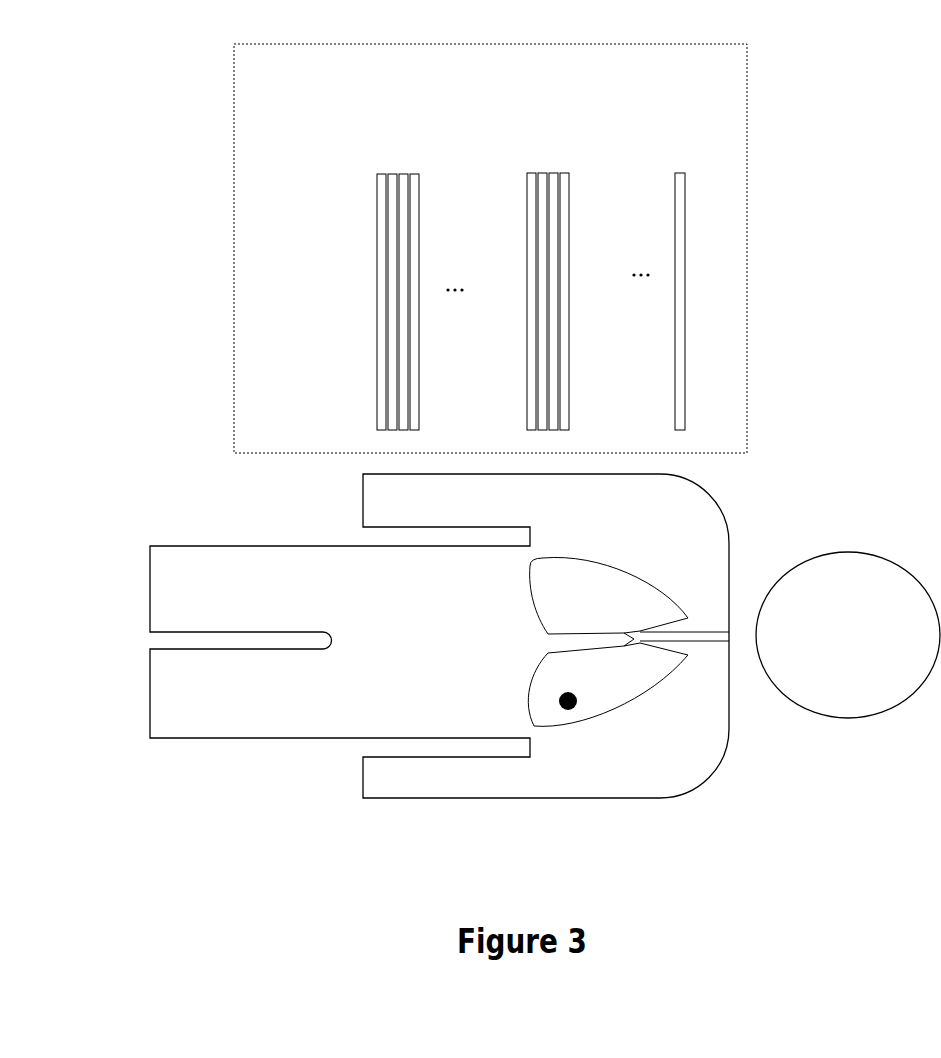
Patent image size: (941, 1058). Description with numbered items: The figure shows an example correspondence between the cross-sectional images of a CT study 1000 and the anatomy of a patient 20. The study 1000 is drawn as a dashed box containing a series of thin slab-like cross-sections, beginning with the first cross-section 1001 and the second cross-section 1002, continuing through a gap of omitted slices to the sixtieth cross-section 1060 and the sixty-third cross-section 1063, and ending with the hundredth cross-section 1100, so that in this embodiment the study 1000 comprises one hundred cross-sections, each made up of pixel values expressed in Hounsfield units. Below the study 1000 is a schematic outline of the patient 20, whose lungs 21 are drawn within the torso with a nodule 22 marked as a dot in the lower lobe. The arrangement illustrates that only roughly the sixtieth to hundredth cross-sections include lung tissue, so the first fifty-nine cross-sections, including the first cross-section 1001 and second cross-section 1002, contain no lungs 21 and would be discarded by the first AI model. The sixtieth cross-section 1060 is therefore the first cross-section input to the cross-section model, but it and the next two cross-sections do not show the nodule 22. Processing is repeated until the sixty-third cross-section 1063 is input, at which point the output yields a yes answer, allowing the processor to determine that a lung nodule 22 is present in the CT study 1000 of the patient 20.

The study 1000 is at (536, 88).
The first cross-section 1001 is at (372, 178).
The second cross-section 1002 is at (433, 136).
The sixtieth cross-section 1060 is at (523, 172).
The sixty-third cross-section 1063 is at (617, 135).
The hundredth cross-section 1100 is at (730, 135).
The patient 20 is at (729, 530).
The lungs 21 is at (608, 700).
The nodule 22 is at (570, 712).